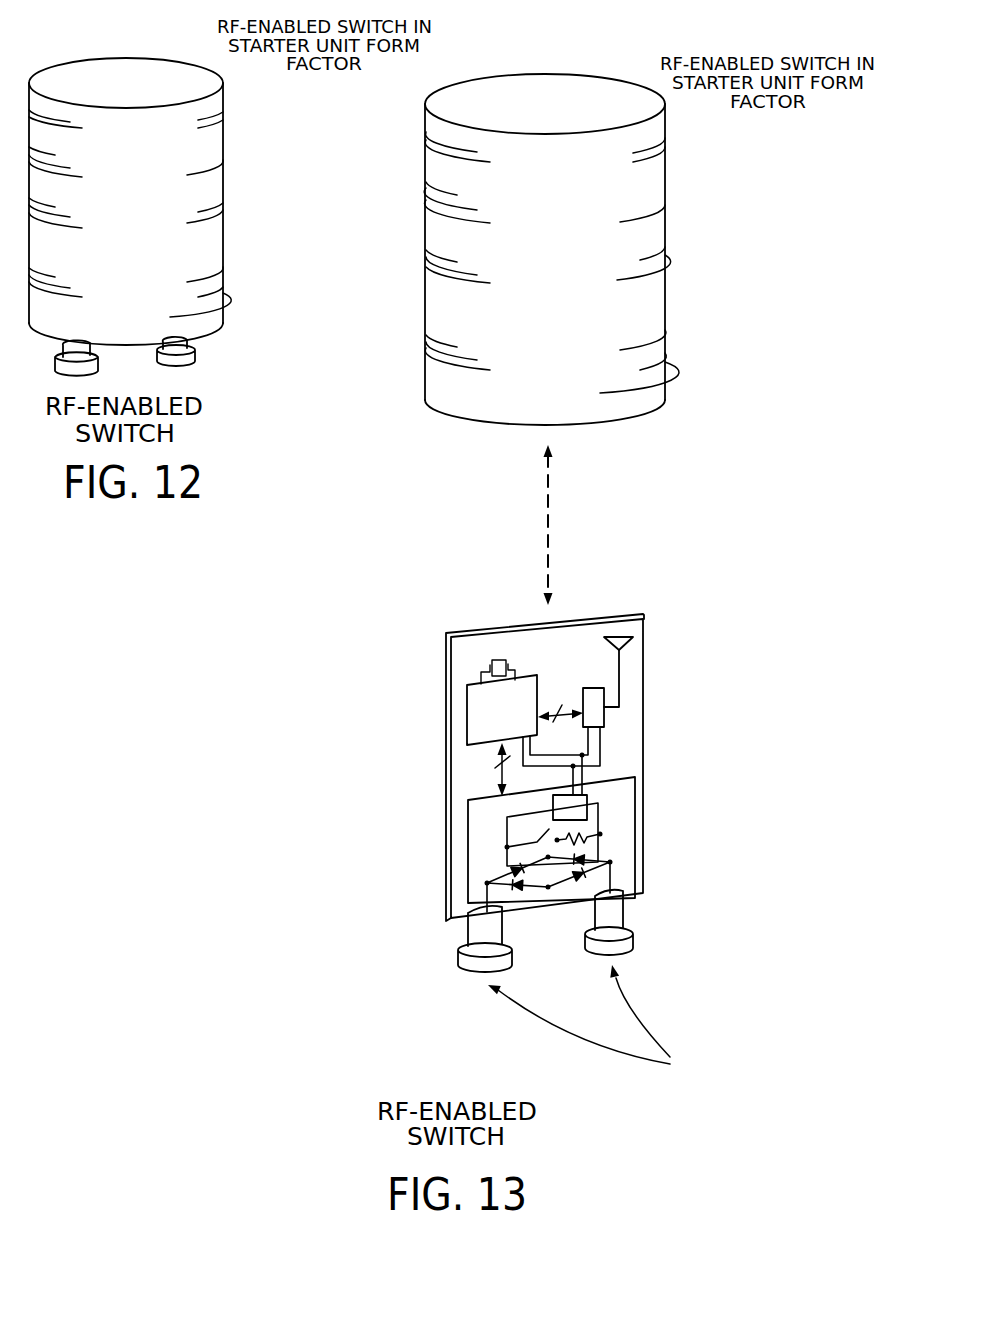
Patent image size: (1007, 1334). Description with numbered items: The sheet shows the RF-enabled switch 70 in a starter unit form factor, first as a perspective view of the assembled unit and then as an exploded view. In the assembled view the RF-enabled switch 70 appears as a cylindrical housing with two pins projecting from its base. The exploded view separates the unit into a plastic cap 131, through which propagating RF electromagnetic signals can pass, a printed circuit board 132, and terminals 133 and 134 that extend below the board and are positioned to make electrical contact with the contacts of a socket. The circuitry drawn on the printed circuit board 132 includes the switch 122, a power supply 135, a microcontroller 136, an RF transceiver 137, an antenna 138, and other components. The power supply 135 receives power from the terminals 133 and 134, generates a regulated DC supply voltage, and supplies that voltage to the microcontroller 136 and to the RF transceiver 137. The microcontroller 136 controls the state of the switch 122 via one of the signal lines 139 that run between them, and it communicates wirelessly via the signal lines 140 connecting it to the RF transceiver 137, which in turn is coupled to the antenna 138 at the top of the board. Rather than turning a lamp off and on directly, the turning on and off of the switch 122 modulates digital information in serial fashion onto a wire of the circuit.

In FIG. 12, the RF-enabled switch 70 is at (265, 105).
In FIG. 13, the RF-enabled switch 70 is at (531, 570).
In FIG. 13, the switch 122 is at (520, 835).
In FIG. 13, the plastic cap 131 is at (568, 272).
In FIG. 13, the printed circuit board 132 is at (647, 621).
In FIG. 13, the terminal 133 is at (458, 953).
In FIG. 13, the terminal 134 is at (585, 941).
In FIG. 13, the power supply 135 is at (588, 804).
In FIG. 13, the microcontroller 136 is at (467, 711).
In FIG. 13, the RF transceiver 137 is at (625, 725).
In FIG. 13, the antenna 138 is at (632, 670).
In FIG. 13, the signal lines 139 is at (501, 772).
In FIG. 13, the signal lines 140 is at (556, 716).